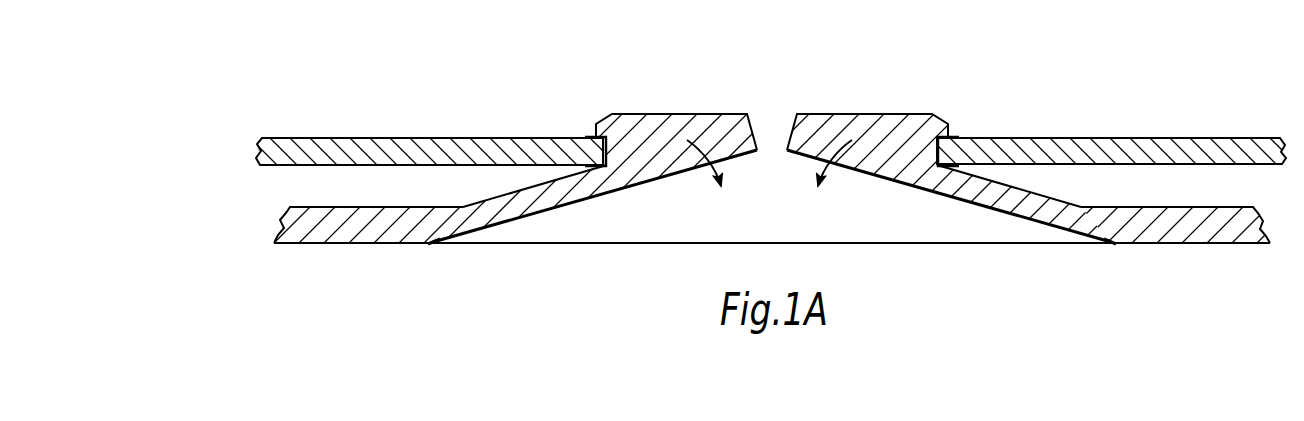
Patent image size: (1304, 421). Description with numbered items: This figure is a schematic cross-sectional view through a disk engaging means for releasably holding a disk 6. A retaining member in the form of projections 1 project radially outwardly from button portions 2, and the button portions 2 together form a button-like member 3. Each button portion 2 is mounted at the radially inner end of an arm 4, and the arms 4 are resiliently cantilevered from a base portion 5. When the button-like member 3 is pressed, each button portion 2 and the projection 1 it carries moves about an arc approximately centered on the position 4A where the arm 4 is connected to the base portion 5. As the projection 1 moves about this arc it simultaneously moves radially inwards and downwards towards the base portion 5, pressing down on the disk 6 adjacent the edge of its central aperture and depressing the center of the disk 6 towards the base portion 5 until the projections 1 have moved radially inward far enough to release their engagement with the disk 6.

The projection 1 is at (600, 126).
The button portion 2 is at (655, 114).
The button-like member 3 is at (818, 88).
The arm 4 is at (535, 192).
The position where the arm is connected to the base portion 4A is at (441, 224).
The base portion 5 is at (377, 230).
The disk 6 is at (345, 148).